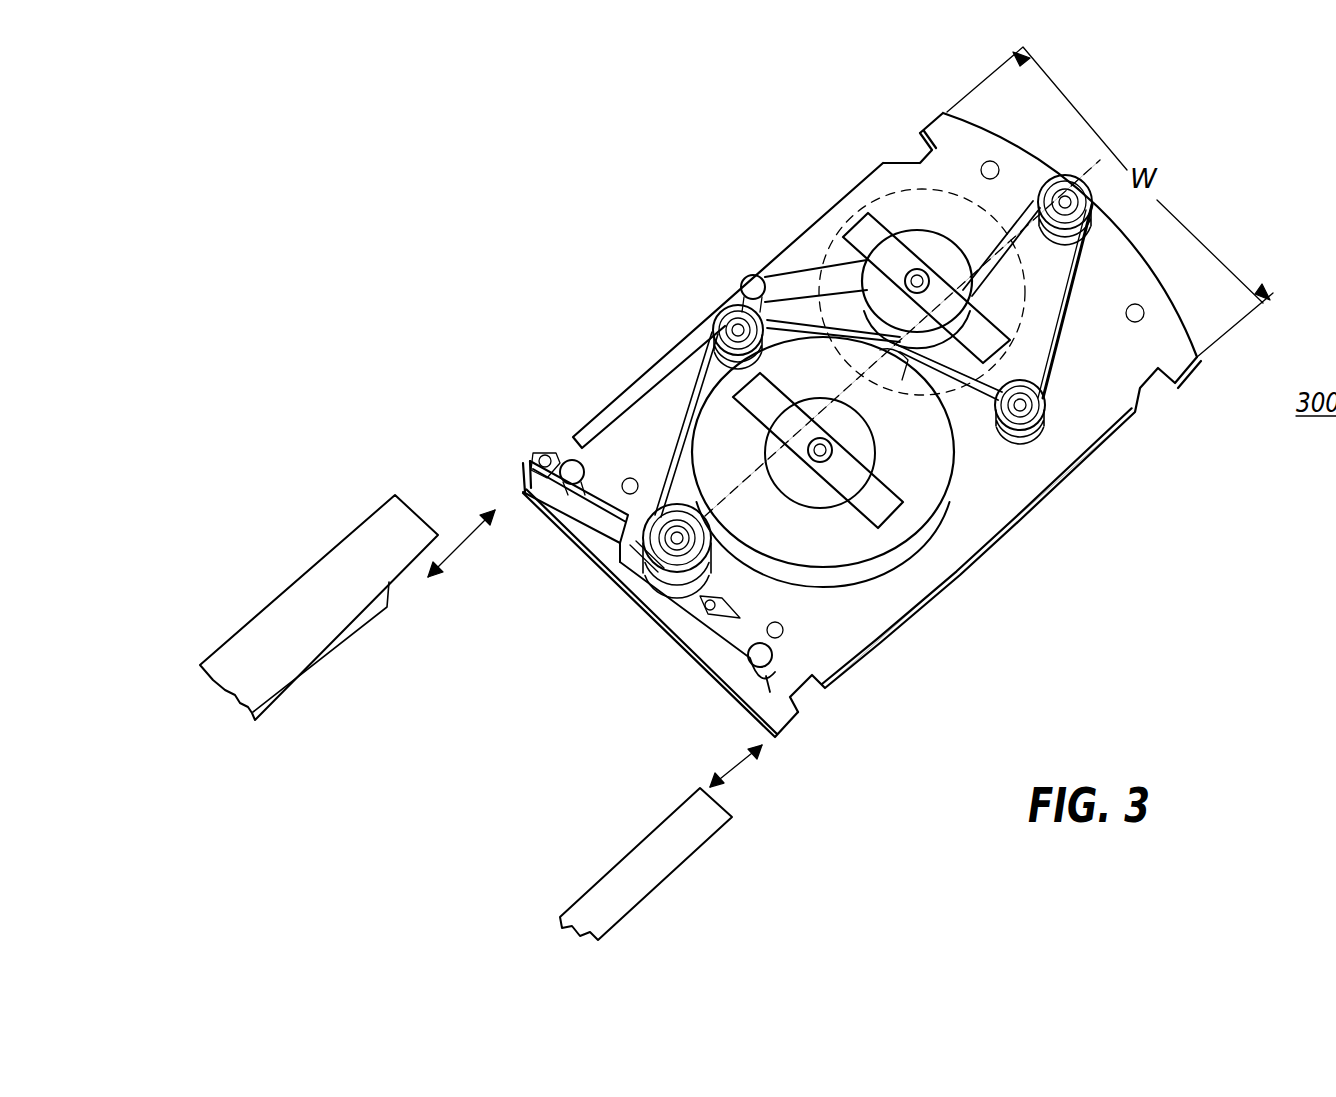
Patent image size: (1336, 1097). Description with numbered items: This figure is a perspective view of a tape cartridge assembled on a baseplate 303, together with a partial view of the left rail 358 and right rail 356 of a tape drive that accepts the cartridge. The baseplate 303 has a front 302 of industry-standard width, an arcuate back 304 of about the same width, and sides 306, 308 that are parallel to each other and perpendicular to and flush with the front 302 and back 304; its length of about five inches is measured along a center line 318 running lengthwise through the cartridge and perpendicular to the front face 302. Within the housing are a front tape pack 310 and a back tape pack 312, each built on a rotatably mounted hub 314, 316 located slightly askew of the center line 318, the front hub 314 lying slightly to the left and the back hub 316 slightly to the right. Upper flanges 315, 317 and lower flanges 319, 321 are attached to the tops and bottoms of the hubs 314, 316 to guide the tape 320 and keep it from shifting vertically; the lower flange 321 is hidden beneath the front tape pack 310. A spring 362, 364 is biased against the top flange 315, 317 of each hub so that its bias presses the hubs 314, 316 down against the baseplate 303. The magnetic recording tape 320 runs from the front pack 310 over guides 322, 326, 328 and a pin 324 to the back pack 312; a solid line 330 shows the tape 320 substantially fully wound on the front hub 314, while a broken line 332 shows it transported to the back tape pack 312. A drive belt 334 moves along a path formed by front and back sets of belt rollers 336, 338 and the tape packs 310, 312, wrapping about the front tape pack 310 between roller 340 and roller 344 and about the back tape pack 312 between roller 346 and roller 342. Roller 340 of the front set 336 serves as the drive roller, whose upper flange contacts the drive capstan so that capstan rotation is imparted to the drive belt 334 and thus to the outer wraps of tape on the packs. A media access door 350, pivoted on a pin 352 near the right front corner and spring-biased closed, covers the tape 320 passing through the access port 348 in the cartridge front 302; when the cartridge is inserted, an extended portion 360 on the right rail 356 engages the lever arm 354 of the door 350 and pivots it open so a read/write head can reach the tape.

The front 302 is at (722, 702).
The baseplate 303 is at (1180, 343).
The back 304 is at (1160, 257).
The side of baseplate 306 is at (1038, 591).
The side of baseplate 308 is at (780, 240).
The front tape pack 310 is at (748, 455).
The back tape pack 312 is at (948, 262).
The front hub 314 is at (835, 518).
The upper flange 315 is at (798, 498).
The back hub 316 is at (937, 390).
The upper flange 317 is at (925, 205).
The center line 318 is at (872, 352).
The lower flange 319 is at (912, 385).
The tape 320 is at (808, 245).
The lower flange 321 is at (955, 480).
The guide 322 is at (790, 702).
The pin 324 is at (625, 585).
The guide 326 is at (562, 460).
The guide 328 is at (742, 285).
The solid line 330 is at (985, 545).
The broken line 332 is at (1068, 350).
The drive belt 334 is at (680, 425).
The front set of belt rollers 336 is at (715, 340).
The back set of belt rollers 338 is at (1052, 470).
The drive roller 340 is at (668, 600).
The roller 342 is at (715, 318).
The roller 344 is at (1040, 495).
The roller 346 is at (1075, 182).
The access port 348 is at (615, 555).
The media access door 350 is at (467, 543).
The pin 352 is at (538, 455).
The lever arm 354 is at (523, 476).
The right rail 356 is at (345, 575).
The left rail 358 is at (632, 850).
The extended portion 360 is at (283, 700).
The spring 362 is at (940, 575).
The spring 364 is at (870, 240).